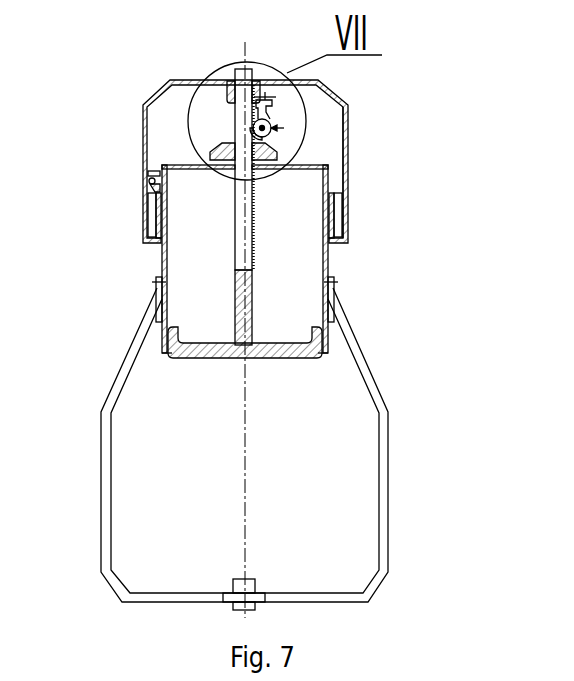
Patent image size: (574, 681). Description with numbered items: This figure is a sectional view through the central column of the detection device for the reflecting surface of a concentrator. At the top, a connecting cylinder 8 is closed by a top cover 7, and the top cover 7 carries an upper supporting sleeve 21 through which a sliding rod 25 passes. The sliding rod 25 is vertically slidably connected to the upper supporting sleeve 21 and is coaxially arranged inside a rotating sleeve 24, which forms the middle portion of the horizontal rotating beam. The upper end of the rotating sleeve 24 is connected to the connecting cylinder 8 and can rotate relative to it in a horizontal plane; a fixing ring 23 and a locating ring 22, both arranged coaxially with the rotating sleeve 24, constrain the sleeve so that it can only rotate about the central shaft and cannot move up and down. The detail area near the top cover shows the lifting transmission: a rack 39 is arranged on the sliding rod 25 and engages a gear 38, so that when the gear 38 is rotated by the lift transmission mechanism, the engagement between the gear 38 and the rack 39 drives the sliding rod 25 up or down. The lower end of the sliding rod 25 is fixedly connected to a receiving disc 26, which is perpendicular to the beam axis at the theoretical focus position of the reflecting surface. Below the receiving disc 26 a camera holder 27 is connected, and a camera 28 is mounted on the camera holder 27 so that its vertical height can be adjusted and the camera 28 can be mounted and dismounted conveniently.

The top cover 7 is at (190, 129).
The connecting cylinder 8 is at (430, 172).
The upper supporting sleeve 21 is at (146, 114).
The locating ring 22 is at (96, 189).
The fixing ring 23 is at (187, 236).
The rotating sleeve 24 is at (185, 259).
The sliding rod 25 is at (376, 223).
The receiving disc 26 is at (343, 393).
The camera holder 27 is at (309, 445).
The camera 28 is at (370, 564).
The gear 38 is at (384, 74).
The rack 39 is at (386, 194).